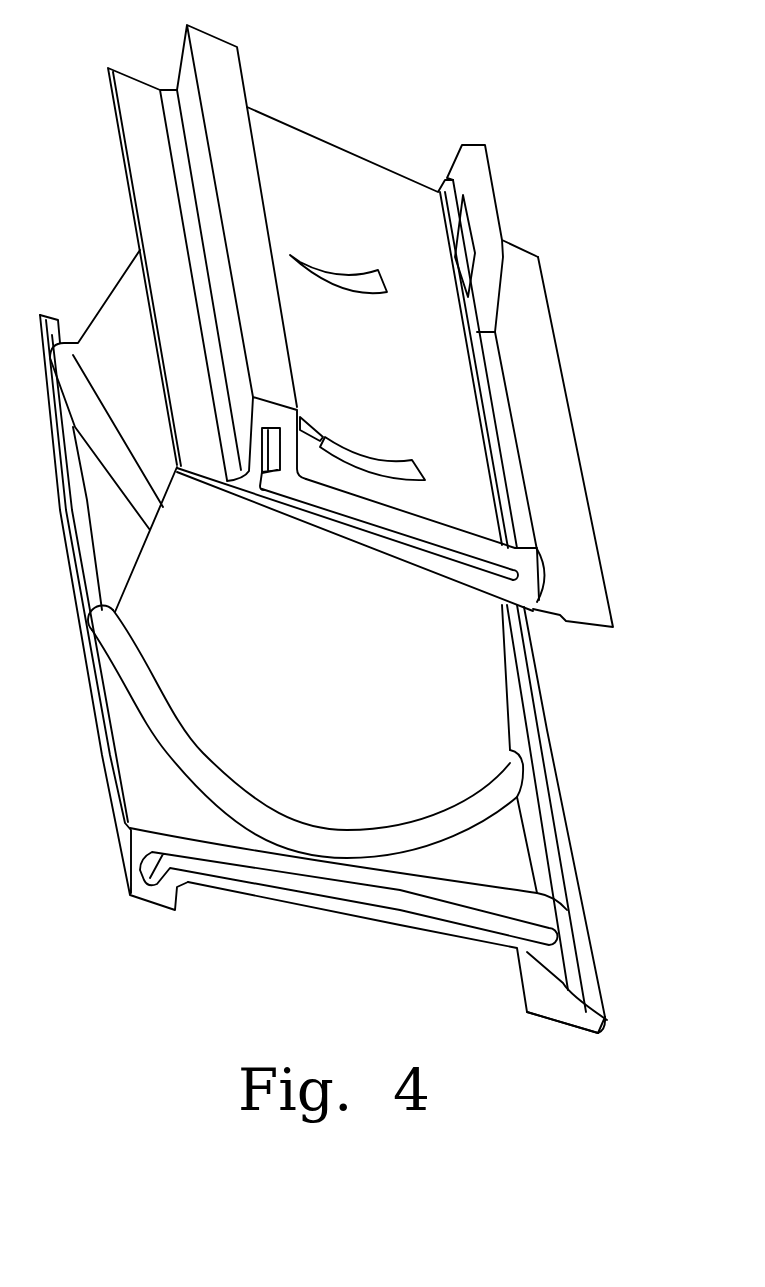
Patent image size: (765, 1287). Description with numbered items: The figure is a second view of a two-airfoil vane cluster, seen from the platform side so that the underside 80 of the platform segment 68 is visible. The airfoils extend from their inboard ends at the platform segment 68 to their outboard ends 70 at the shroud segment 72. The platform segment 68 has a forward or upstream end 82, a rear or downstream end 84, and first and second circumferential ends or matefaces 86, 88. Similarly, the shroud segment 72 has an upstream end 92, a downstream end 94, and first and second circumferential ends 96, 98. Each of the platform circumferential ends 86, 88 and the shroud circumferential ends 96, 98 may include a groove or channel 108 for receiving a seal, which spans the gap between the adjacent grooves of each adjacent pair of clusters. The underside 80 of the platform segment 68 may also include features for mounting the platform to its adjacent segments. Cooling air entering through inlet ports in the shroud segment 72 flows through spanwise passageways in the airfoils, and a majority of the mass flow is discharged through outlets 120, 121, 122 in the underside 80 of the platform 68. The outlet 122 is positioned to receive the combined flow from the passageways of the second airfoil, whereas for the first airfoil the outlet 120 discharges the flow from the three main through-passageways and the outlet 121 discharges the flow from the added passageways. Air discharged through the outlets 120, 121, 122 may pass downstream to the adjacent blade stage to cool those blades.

The platform segment 68 is at (546, 455).
The outboard end 70 is at (463, 816).
The shroud segment 72 is at (505, 865).
The underside 80 is at (373, 180).
The forward/upstream end 82 is at (605, 545).
The rear/downstream end 84 is at (110, 98).
The first circumferential end 86 is at (540, 625).
The second circumferential end 88 is at (299, 125).
The upstream end 92 is at (612, 1020).
The downstream end 94 is at (125, 824).
The first circumferential end 96 is at (556, 1005).
The second circumferential end 98 is at (70, 323).
The groove or channel 108 is at (447, 915).
The outlet 120 is at (402, 458).
The outlet 121 is at (313, 430).
The outlet 122 is at (372, 279).